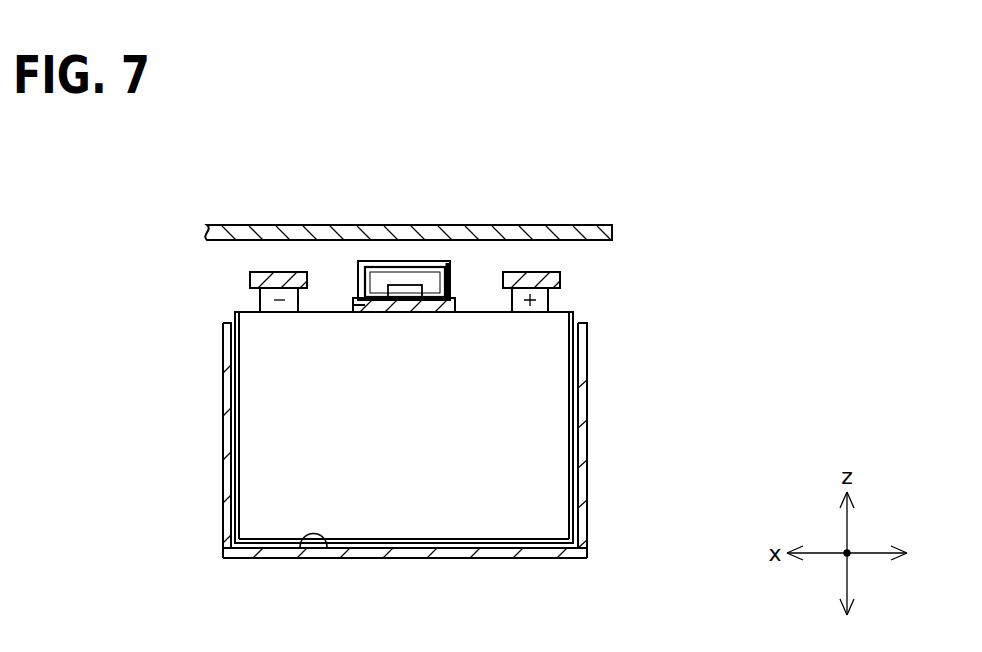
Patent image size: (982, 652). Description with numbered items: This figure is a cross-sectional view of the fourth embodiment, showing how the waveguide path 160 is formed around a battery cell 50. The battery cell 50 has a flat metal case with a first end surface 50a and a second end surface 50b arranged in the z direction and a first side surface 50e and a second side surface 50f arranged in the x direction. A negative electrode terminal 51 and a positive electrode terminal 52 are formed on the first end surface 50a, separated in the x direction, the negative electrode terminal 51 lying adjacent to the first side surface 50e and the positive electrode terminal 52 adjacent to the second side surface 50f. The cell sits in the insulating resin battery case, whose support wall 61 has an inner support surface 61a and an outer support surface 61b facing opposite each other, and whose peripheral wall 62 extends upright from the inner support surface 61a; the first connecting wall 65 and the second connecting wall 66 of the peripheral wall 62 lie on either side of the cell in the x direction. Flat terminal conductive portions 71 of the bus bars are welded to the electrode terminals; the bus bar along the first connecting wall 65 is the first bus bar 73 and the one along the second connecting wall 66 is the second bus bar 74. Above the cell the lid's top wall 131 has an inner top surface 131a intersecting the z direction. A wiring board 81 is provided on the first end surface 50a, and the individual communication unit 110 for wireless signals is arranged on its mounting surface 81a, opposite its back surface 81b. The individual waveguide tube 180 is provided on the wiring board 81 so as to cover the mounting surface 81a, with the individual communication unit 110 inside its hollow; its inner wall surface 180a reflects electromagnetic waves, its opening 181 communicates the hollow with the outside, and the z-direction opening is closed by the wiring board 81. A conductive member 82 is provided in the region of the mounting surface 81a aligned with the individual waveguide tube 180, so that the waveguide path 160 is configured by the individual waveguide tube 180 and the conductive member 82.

The battery cell 50 is at (239, 472).
The first end surface 50a is at (232, 314).
The second end surface 50b is at (513, 546).
The first side surface 50e is at (239, 509).
The second side surface 50f is at (575, 452).
The negative electrode terminal 51 is at (260, 300).
The positive electrode terminal 52 is at (548, 302).
The support wall 61 is at (450, 559).
The inner support surface 61a is at (327, 541).
The outer support surface 61b is at (287, 559).
The peripheral wall 62 is at (598, 402).
The first connecting wall 65 is at (223, 422).
The second connecting wall 66 is at (588, 420).
The terminal conductive portion 71 is at (250, 278).
The first bus bar 73 is at (242, 260).
The second bus bar 74 is at (574, 270).
The wiring board 81 is at (450, 278).
The mounting surface 81a is at (355, 288).
The back surface 81b is at (432, 313).
The conductive member 82 is at (443, 262).
The individual communication unit 110 is at (406, 285).
The top wall 131 is at (610, 246).
The inner top surface 131a is at (554, 240).
The waveguide path 160 is at (388, 272).
The individual waveguide tube 180 is at (453, 292).
The inner wall surface 180a is at (365, 290).
The opening 181 is at (357, 295).